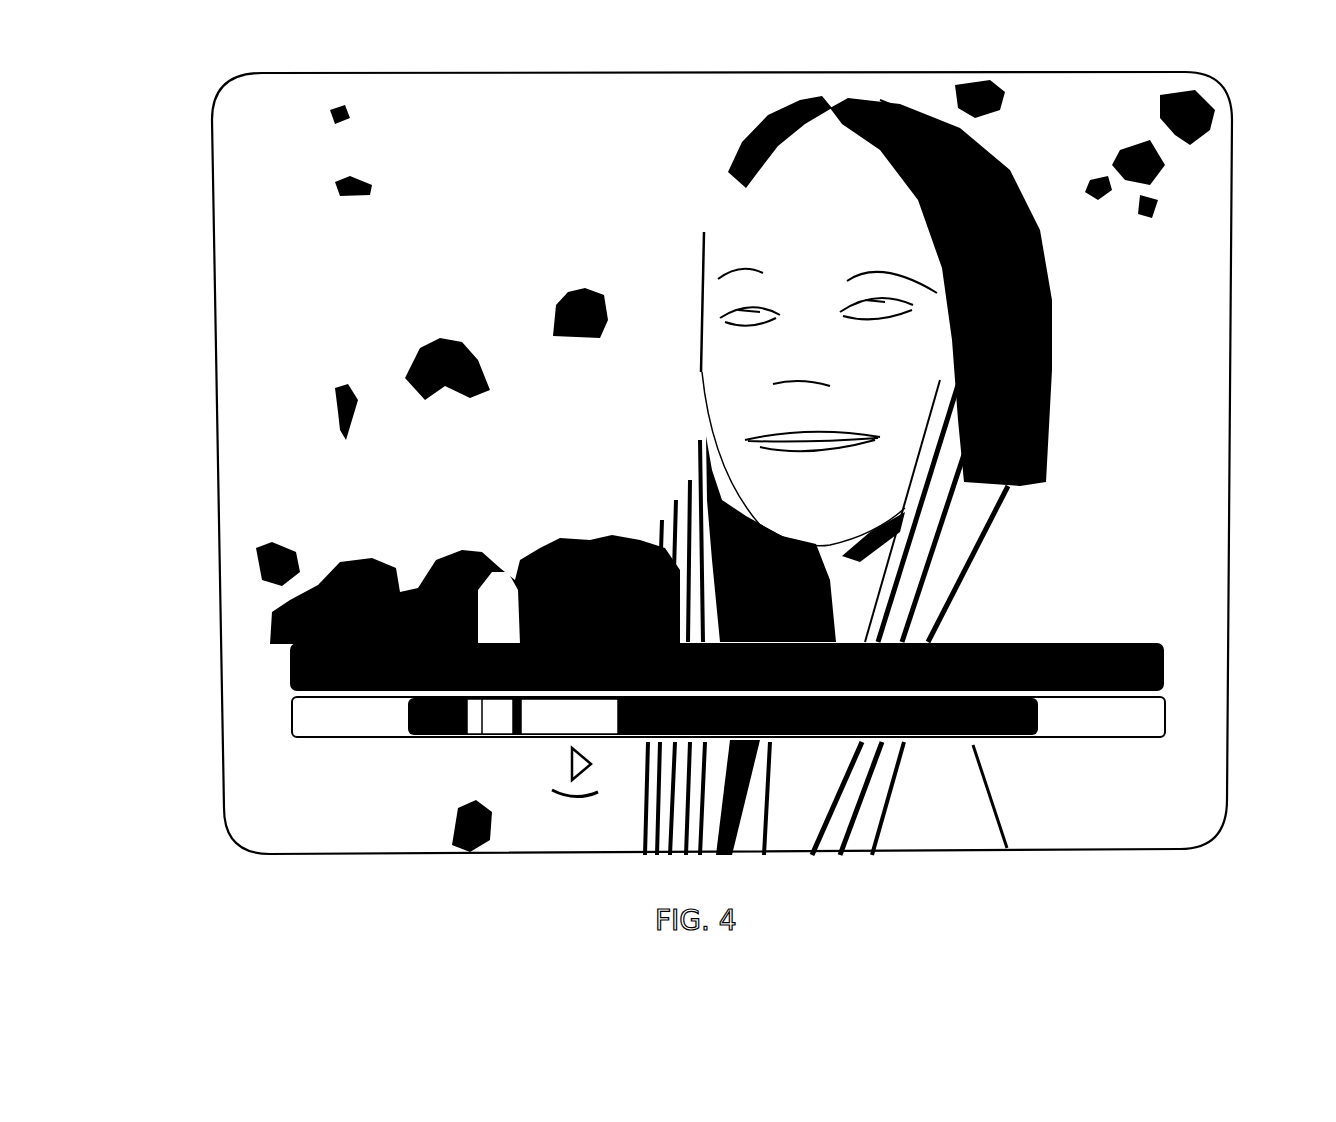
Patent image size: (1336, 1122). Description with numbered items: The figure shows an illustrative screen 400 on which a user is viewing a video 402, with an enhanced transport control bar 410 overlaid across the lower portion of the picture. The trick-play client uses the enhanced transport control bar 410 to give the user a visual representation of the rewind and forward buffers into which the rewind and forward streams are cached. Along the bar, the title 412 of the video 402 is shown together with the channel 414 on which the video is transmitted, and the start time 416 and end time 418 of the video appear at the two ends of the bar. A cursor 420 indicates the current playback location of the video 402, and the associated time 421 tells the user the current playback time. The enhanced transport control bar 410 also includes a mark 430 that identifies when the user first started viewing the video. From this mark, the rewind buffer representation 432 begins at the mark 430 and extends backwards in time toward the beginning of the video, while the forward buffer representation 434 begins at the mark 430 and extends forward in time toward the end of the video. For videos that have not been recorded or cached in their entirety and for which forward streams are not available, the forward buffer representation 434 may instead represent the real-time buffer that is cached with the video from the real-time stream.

The screen 400 is at (208, 110).
The video 402 is at (240, 318).
The enhanced transport control bar 410 is at (283, 667).
The title 412 is at (358, 645).
The channel 414 is at (1160, 650).
The start time 416 is at (295, 737).
The end time 418 is at (1150, 715).
The cursor 420 is at (487, 785).
The time 421 is at (520, 783).
The mark 430 is at (473, 705).
The rewind buffer representation 432 is at (335, 848).
The forward buffer representation 434 is at (580, 722).